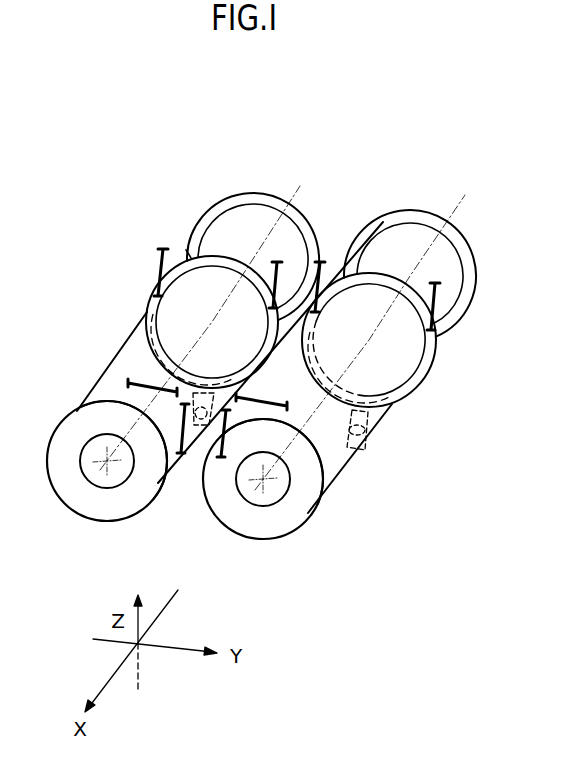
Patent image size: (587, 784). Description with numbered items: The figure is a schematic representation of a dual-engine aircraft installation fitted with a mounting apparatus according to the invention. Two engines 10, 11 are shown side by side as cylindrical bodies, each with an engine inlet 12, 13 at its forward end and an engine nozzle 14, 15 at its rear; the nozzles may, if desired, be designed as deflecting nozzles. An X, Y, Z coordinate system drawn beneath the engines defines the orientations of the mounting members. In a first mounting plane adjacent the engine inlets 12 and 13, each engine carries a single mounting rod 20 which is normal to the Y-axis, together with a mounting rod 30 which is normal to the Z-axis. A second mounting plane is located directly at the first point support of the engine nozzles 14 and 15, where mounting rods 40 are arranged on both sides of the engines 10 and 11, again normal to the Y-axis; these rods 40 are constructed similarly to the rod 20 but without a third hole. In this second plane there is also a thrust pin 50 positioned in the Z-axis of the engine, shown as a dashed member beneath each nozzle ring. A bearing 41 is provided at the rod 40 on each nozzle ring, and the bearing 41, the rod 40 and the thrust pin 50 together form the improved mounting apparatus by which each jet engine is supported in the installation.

The engine 10 is at (377, 365).
The engine 11 is at (171, 320).
The engine inlet 12 is at (302, 517).
The engine inlet 13 is at (72, 432).
The engine nozzle 14 is at (423, 257).
The engine nozzle 15 is at (265, 231).
The mounting rod 20 is at (205, 430).
The mounting rod 30 is at (128, 382).
The mounting rod 40 is at (160, 278).
The bearing 41 is at (191, 258).
The thrust pin 50 is at (212, 428).